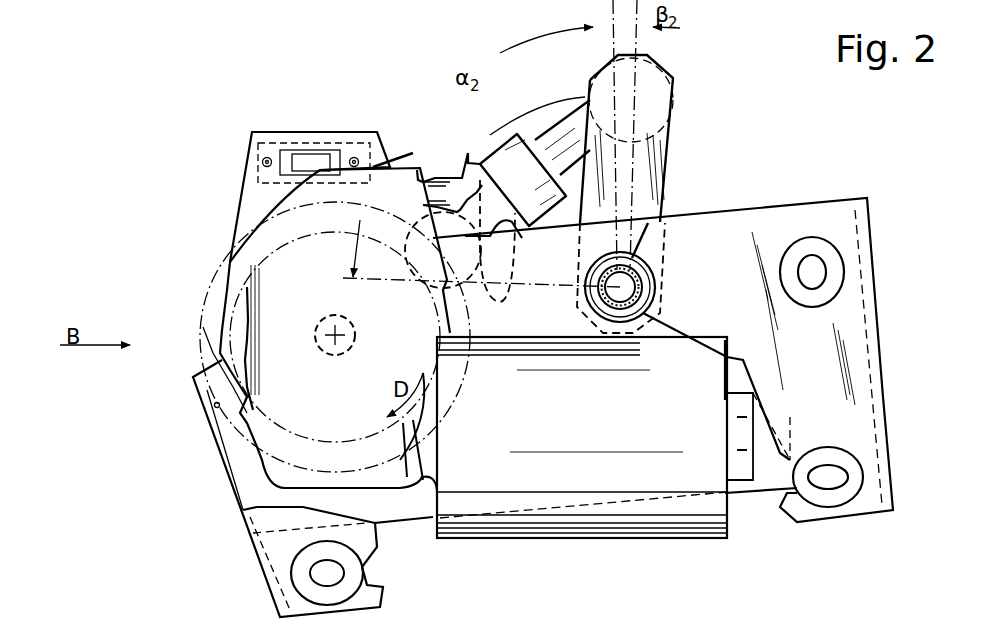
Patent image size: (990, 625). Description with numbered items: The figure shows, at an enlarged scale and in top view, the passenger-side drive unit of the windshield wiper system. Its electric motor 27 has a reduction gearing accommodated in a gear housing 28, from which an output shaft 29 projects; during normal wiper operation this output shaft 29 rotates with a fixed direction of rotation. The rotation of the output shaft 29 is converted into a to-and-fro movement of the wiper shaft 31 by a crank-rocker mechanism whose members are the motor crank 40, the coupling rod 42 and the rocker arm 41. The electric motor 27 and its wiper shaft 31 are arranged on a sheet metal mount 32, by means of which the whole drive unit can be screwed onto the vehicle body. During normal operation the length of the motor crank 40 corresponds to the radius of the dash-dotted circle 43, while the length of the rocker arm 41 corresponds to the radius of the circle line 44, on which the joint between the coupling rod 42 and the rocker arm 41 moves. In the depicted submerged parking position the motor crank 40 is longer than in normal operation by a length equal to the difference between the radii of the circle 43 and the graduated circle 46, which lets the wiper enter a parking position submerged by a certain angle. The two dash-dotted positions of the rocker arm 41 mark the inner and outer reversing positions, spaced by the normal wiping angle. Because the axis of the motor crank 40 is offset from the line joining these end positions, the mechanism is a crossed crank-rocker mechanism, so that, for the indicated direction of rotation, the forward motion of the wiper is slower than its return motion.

The electric motor 27 is at (620, 520).
The gear housing 28 is at (247, 302).
The output shaft 29 is at (393, 290).
The wiper shaft 31 is at (643, 280).
The sheet metal mount 32 is at (857, 365).
The motor crank 40 is at (367, 310).
The rocker arm 41 is at (660, 163).
The coupling rod 42 is at (558, 148).
The circle 43 is at (307, 213).
The circle line 44 is at (493, 140).
The graduated circle 46 is at (333, 470).